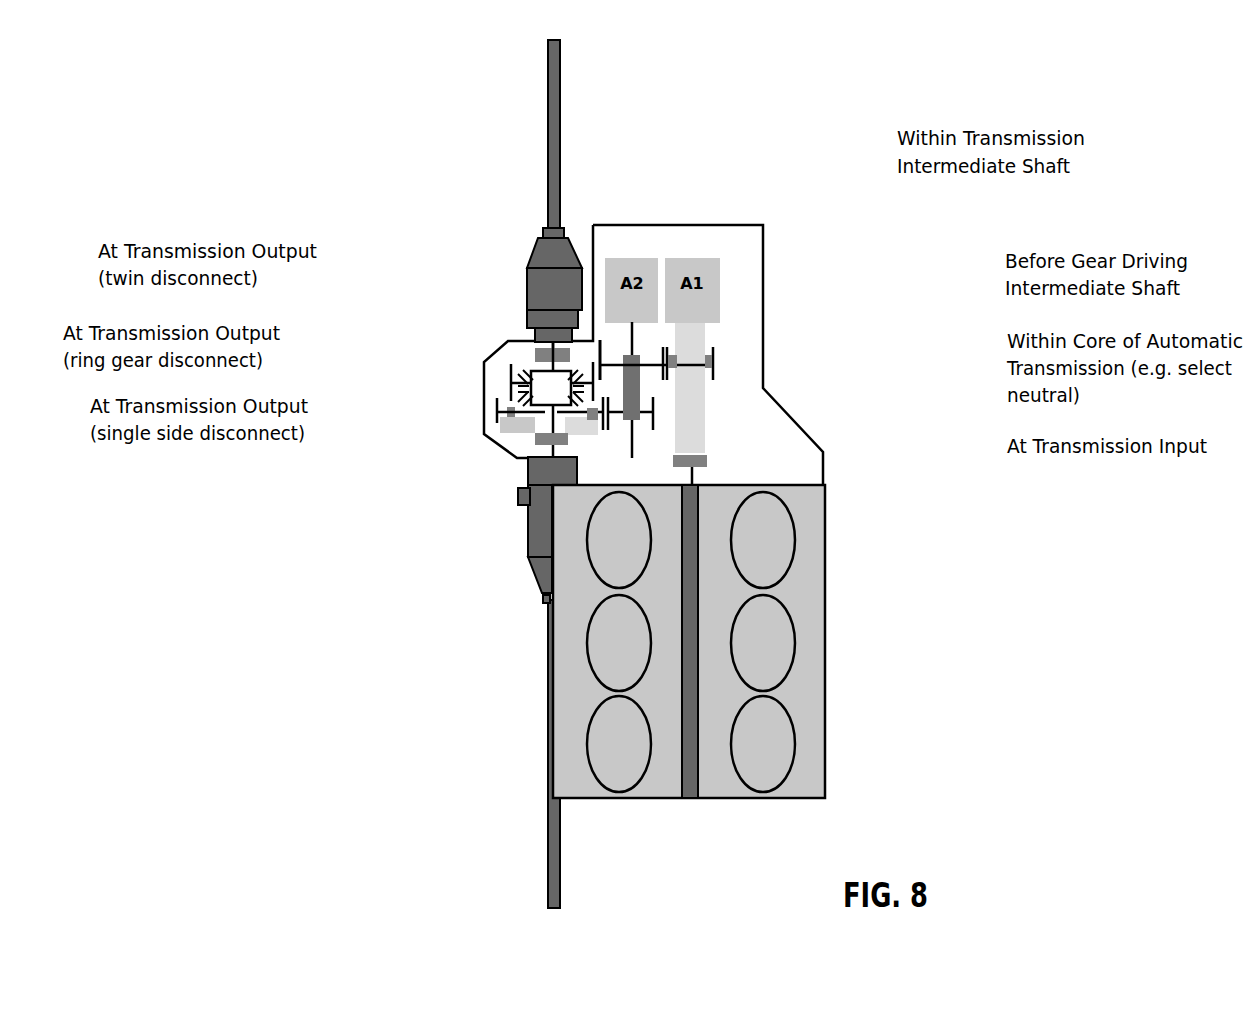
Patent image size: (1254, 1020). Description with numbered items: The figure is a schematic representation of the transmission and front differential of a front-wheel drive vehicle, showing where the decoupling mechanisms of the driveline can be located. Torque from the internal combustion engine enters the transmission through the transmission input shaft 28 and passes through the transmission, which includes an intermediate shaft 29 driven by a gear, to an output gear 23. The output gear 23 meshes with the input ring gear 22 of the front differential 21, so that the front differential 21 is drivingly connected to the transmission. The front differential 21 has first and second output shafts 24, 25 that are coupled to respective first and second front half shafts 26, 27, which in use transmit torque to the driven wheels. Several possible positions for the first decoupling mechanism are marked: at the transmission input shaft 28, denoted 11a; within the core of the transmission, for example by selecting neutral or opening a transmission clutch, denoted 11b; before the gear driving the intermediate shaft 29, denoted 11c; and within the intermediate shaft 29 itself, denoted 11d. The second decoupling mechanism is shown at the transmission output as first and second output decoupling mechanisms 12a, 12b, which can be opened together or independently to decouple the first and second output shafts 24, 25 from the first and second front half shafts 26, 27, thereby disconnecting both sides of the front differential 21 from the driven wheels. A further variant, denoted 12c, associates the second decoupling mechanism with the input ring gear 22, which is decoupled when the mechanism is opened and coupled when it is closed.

The first decoupling mechanism arrangement at transmission input shaft 11a is at (707, 462).
The first decoupling mechanism arrangement within transmission 11b is at (700, 407).
The first decoupling mechanism arrangement before intermediate shaft gear 11c is at (713, 365).
The first decoupling mechanism arrangement in intermediate shaft 11d is at (632, 365).
The first output decoupling mechanism 12a is at (537, 352).
The second output decoupling mechanism 12b is at (535, 436).
The second decoupling mechanism at input ring gear 12c is at (507, 410).
The front differential 21 is at (347, 555).
The input ring gear 22 is at (505, 414).
The output gear 23 is at (657, 423).
The first output shaft 24 is at (548, 448).
The second output shaft 25 is at (545, 350).
The first front half shaft 26 is at (550, 842).
The second front half shaft 27 is at (548, 128).
The transmission input shaft 28 is at (690, 470).
The intermediate shaft 29 is at (632, 427).